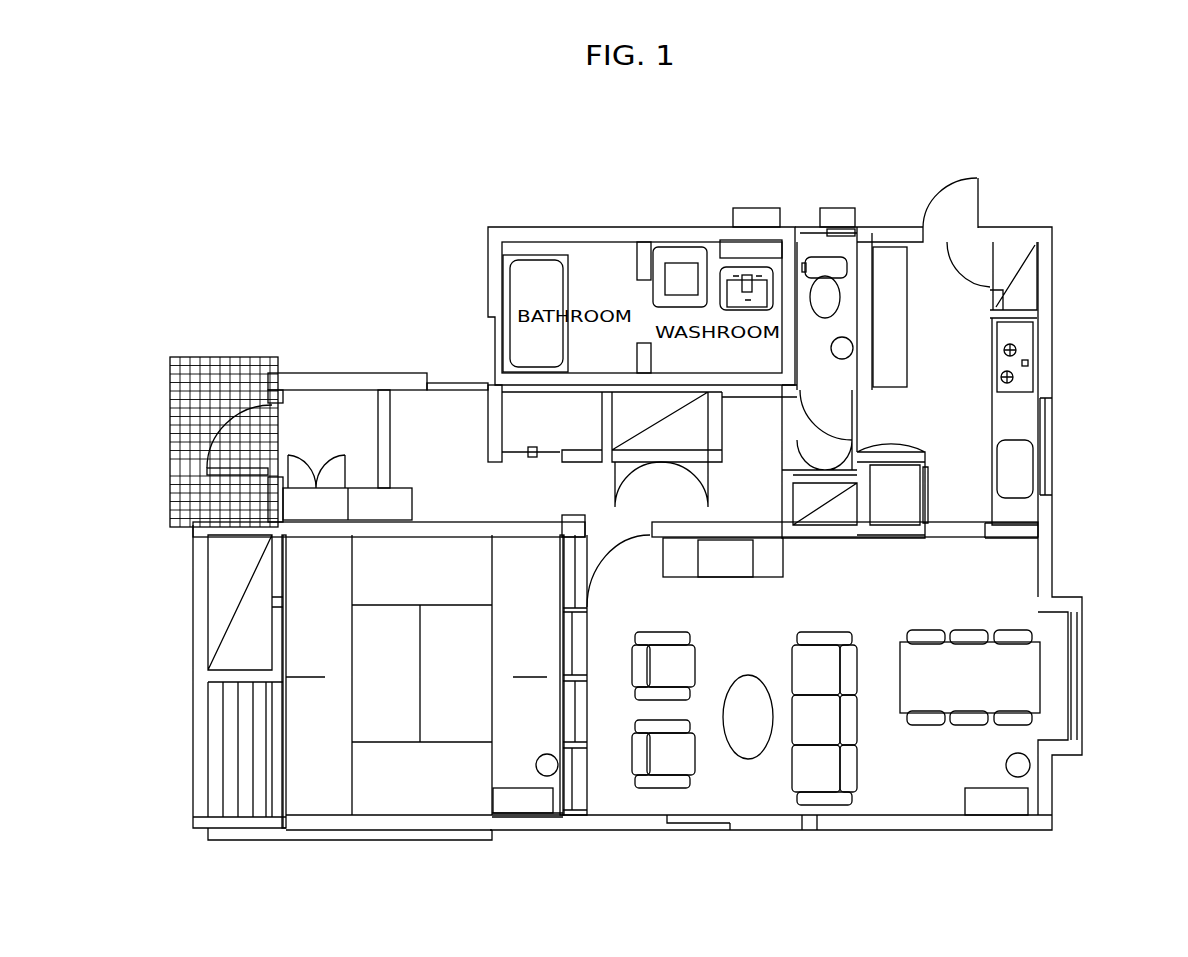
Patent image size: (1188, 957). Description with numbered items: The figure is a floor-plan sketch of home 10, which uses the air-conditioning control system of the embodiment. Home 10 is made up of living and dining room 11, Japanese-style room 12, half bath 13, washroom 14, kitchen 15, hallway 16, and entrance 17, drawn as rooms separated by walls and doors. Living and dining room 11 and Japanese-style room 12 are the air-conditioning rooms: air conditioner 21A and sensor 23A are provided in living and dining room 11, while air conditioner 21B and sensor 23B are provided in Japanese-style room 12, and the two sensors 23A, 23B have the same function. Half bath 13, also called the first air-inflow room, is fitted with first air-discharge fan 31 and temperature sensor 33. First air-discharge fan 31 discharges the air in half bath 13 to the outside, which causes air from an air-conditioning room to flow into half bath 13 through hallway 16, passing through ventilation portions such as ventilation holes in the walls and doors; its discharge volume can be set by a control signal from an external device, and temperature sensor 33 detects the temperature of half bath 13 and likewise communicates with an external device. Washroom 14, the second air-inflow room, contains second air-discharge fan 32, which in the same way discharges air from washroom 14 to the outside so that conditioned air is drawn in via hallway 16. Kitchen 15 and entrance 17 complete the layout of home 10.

The home 10 is at (345, 138).
The living and dining room 11 is at (895, 565).
The Japanese-style room 12 is at (405, 707).
The half bath 13 is at (840, 258).
The washroom 14 is at (680, 270).
The kitchen 15 is at (977, 333).
The hallway 16 is at (546, 487).
The entrance 17 is at (343, 405).
The air conditioner 21A is at (1015, 800).
The air conditioner 21B is at (525, 805).
The sensor 23A is at (1030, 766).
The sensor 23B is at (558, 767).
The first air-discharge fan 31 is at (836, 207).
The second air-discharge fan 32 is at (758, 207).
The temperature sensor 33 is at (850, 340).